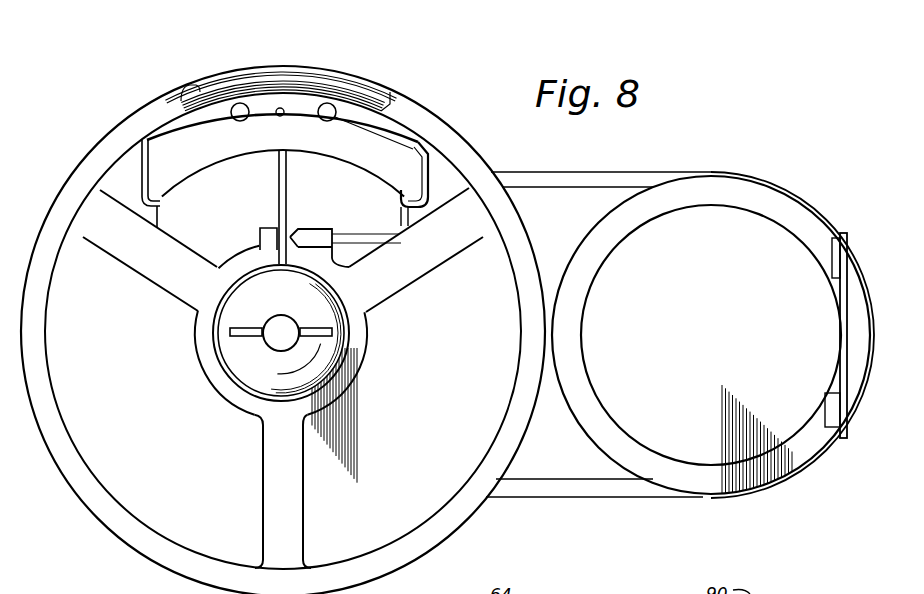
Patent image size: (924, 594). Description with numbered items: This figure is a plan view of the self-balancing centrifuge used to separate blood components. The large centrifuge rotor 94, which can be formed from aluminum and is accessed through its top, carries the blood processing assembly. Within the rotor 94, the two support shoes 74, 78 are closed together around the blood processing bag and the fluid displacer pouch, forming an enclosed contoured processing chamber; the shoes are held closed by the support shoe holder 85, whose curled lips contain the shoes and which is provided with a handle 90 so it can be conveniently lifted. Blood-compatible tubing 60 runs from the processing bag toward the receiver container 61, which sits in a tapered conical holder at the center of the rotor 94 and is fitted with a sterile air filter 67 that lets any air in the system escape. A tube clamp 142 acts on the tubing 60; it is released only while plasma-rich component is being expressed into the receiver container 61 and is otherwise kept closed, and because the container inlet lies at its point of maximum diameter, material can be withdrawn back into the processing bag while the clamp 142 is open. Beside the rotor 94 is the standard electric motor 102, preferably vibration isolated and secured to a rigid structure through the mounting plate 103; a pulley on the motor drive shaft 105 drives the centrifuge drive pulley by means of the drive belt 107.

The blood-compatible tubing 60 is at (287, 200).
The receiver container 61 is at (238, 347).
The sterile air filter 67 is at (293, 338).
The support shoe 74 is at (162, 136).
The support shoe 78 is at (233, 163).
The support shoe holder 85 is at (413, 137).
The handle 90 is at (232, 75).
The centrifuge rotor 94 is at (140, 553).
The electric motor 102 is at (720, 356).
The mounting plate 103 is at (834, 243).
The motor drive shaft 105 is at (713, 483).
The drive belt 107 is at (598, 497).
The tube clamp 142 is at (315, 227).